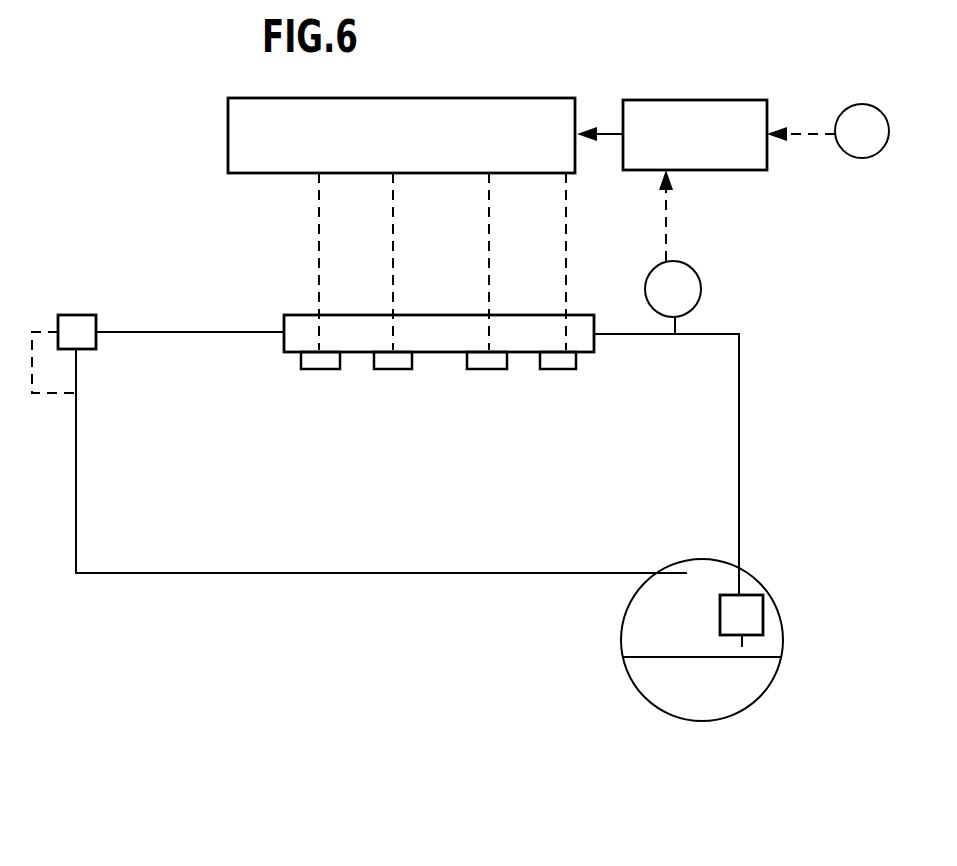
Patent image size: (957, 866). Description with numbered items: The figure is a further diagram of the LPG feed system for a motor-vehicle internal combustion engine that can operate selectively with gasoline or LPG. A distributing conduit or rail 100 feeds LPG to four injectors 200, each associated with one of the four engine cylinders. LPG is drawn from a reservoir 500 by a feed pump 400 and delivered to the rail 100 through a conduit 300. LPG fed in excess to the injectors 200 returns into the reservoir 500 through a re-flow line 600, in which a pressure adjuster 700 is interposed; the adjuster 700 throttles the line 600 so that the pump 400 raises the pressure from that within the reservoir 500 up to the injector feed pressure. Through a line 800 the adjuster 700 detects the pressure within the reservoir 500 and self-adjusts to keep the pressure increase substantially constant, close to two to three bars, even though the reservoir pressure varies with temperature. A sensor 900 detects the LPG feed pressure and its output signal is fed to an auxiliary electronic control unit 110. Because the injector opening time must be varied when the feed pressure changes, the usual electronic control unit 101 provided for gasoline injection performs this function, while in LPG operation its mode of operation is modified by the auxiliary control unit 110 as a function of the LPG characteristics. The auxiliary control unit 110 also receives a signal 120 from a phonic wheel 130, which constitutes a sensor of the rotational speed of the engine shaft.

The distributing conduit 100 is at (452, 307).
The electronic control unit 101 is at (228, 133).
The auxiliary electronic control unit 110 is at (672, 100).
The signal 120 is at (800, 132).
The phonic wheel 130 is at (866, 158).
The injectors 200 is at (400, 370).
The conduit 300 is at (739, 415).
The feed pump 400 is at (748, 607).
The reservoir 500 is at (623, 615).
The re-flow line 600 is at (76, 480).
The pressure adjuster 700 is at (82, 325).
The line 800 is at (28, 340).
The sensor of the LPG feed pressure 900 is at (700, 300).